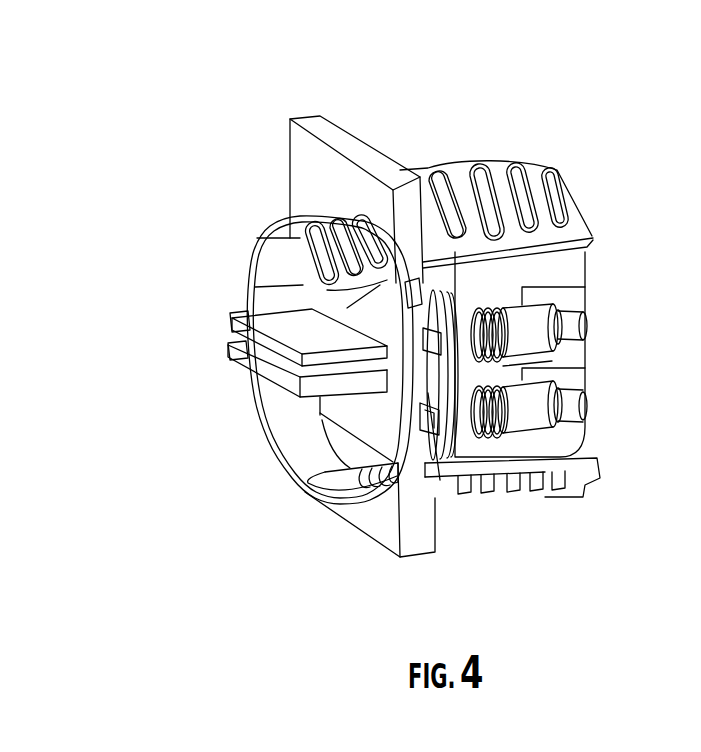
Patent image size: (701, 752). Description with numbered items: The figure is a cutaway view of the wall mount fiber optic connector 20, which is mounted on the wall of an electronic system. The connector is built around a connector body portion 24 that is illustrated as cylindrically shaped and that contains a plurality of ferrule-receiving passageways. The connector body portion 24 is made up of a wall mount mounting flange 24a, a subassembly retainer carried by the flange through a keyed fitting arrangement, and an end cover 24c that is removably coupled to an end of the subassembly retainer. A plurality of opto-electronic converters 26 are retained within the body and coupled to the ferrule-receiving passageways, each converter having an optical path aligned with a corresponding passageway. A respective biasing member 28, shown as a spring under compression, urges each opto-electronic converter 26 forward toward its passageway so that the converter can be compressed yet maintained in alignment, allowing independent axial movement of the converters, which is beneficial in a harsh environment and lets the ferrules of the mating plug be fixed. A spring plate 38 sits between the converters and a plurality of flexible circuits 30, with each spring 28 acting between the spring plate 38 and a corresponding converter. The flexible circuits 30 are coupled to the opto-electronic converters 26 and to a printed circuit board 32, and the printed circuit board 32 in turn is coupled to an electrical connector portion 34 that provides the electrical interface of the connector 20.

The wall mount fiber optic connector 20 is at (283, 568).
The connector body portion 24 is at (468, 167).
The wall mount mounting flange 24a is at (310, 122).
The end cover 24c is at (313, 277).
The opto-electronic (O/E) converter 26 is at (523, 318).
The biasing member 28 is at (483, 305).
The flexible circuit 30 is at (440, 480).
The printed circuit board 32 is at (439, 408).
The electrical connector portion 34 is at (230, 325).
The spring plate 38 is at (451, 298).